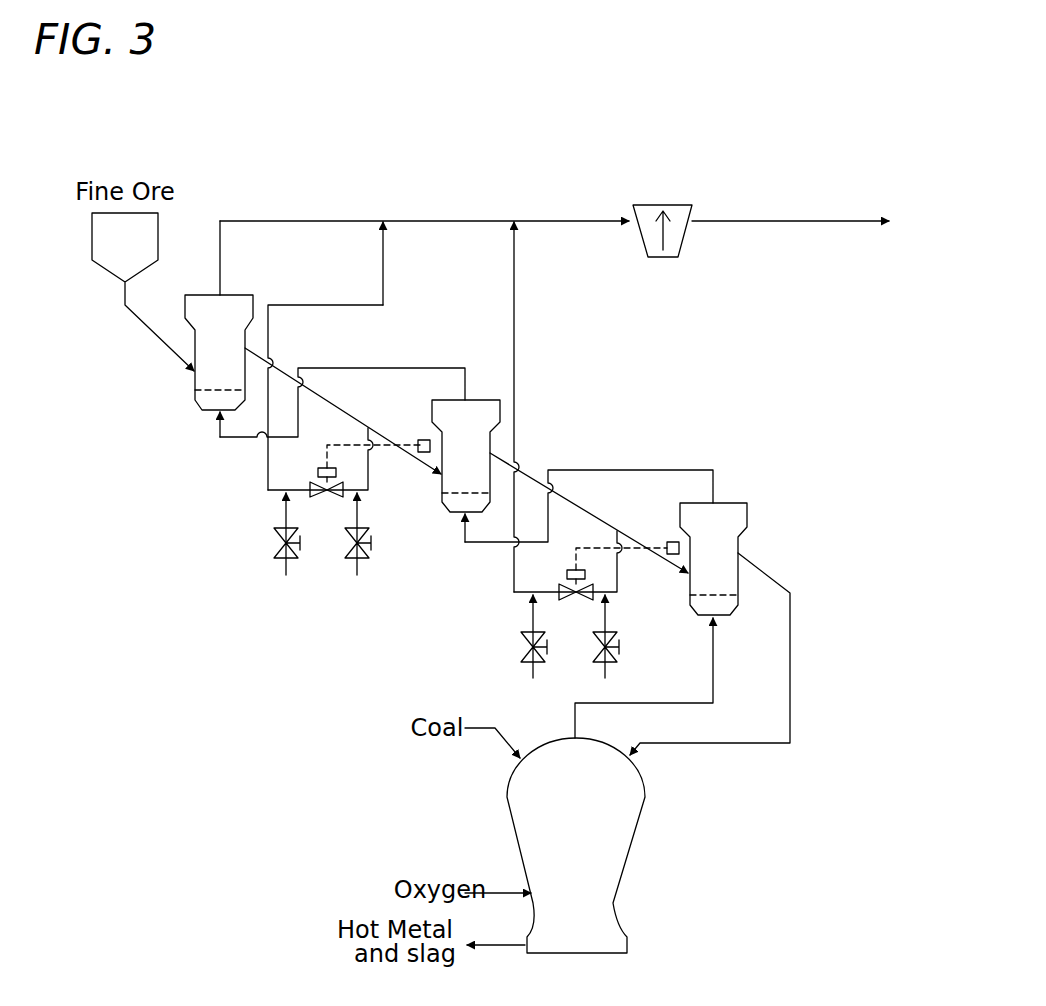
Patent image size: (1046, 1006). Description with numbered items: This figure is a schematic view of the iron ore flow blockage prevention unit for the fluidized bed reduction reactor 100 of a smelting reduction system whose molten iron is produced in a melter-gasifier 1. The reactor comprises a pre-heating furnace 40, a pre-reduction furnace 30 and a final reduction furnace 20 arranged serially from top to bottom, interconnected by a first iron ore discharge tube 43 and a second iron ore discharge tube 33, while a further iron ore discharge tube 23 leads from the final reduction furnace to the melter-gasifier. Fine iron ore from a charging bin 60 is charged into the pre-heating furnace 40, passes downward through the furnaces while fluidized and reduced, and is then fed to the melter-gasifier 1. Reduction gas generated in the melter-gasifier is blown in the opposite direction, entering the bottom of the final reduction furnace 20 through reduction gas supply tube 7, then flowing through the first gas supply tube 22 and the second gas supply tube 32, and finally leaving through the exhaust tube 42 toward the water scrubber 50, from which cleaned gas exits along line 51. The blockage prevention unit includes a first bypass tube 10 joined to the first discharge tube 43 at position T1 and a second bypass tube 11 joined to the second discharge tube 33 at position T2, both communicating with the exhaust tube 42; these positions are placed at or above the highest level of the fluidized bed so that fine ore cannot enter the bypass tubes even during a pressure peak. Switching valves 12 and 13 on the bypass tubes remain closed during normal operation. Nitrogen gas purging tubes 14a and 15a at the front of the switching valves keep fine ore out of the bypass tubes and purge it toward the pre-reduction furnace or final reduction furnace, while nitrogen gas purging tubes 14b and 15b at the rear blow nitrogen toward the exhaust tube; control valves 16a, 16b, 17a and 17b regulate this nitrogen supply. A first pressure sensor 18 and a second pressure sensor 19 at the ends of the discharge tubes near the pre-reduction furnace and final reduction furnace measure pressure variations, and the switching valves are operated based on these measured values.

The melter-gasifier 1 is at (655, 835).
The reduction gas supply tube 7 is at (668, 703).
The first bypass tube 10 is at (353, 306).
The second bypass tube 11 is at (517, 408).
The switching valve 12 is at (318, 472).
The switching valve 13 is at (567, 576).
The nitrogen gas purging tube 14a is at (357, 506).
The nitrogen gas purging tube 14b is at (286, 506).
The nitrogen gas purging tube 15a is at (605, 608).
The nitrogen gas purging tube 15b is at (533, 608).
The control valve 16a is at (366, 536).
The control valve 16b is at (274, 536).
The control valve 17a is at (617, 637).
The control valve 17b is at (521, 637).
The first pressure sensor 18 is at (424, 440).
The second pressure sensor 19 is at (671, 542).
The final reduction furnace 20 is at (750, 515).
The first gas supply tube 22 is at (697, 470).
The iron ore discharge tube 23 is at (790, 657).
The pre-reduction furnace 30 is at (483, 400).
The second gas supply tube 32 is at (450, 366).
The second iron ore discharge tube 33 is at (583, 512).
The pre-heating furnace 40 is at (237, 295).
The exhaust tube 42 is at (397, 216).
The first iron ore discharge tube 43 is at (342, 410).
The water scrubber 50 is at (686, 202).
The cleaned gas discharge line 51 is at (776, 218).
The charging bin 60 is at (158, 240).
The fluidized bed reduction reactor 100 is at (745, 426).
The connection position T1 is at (370, 427).
The connection position T2 is at (618, 530).